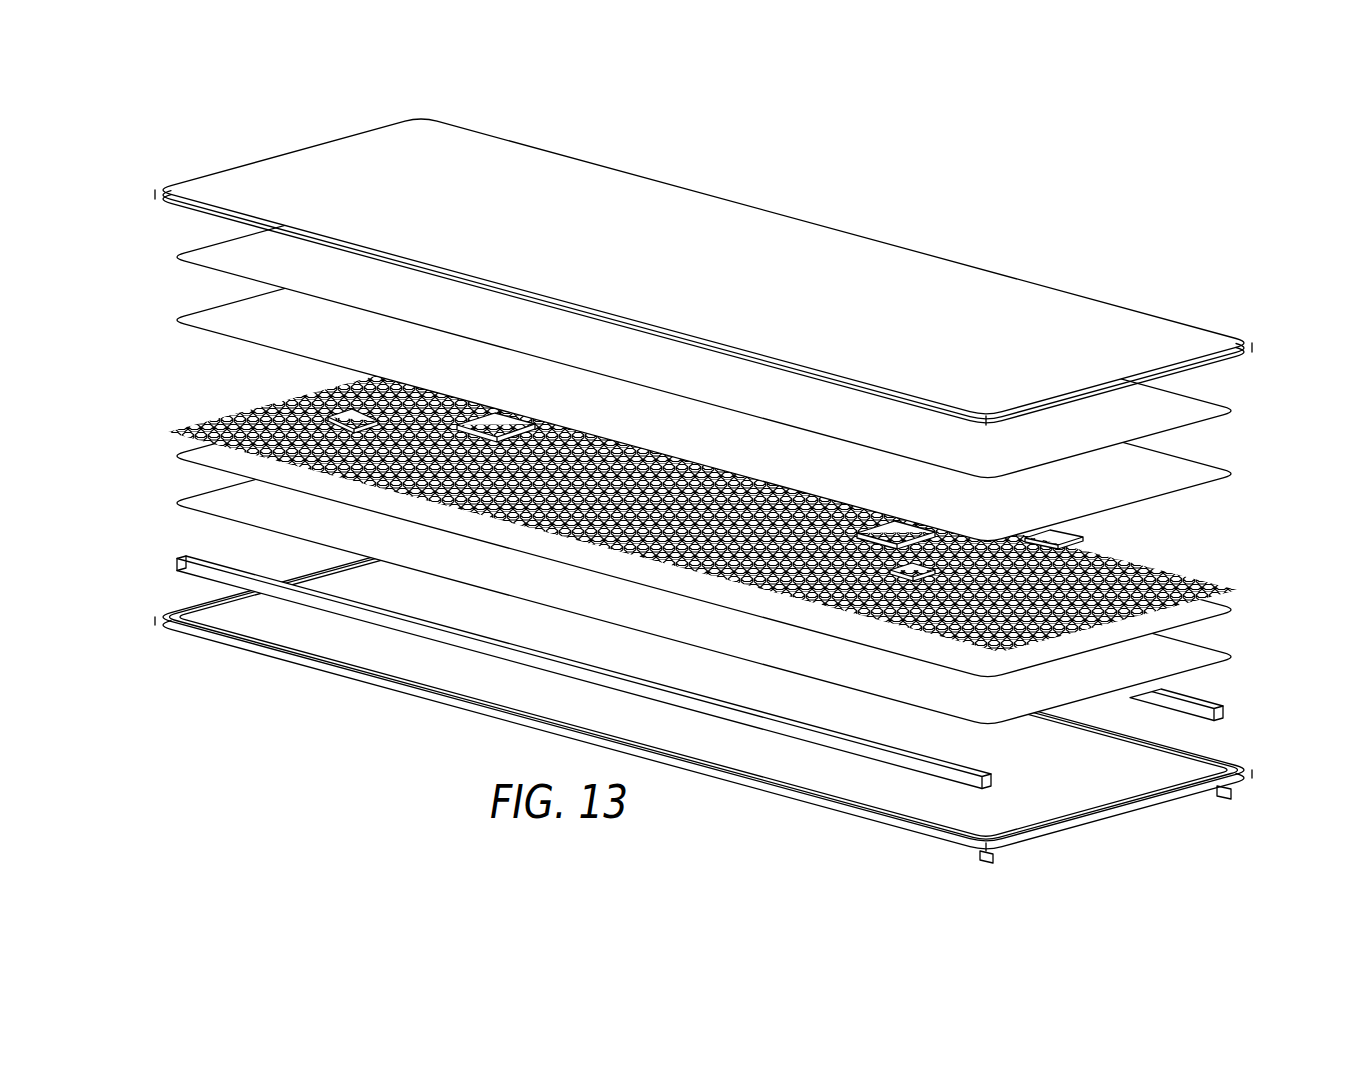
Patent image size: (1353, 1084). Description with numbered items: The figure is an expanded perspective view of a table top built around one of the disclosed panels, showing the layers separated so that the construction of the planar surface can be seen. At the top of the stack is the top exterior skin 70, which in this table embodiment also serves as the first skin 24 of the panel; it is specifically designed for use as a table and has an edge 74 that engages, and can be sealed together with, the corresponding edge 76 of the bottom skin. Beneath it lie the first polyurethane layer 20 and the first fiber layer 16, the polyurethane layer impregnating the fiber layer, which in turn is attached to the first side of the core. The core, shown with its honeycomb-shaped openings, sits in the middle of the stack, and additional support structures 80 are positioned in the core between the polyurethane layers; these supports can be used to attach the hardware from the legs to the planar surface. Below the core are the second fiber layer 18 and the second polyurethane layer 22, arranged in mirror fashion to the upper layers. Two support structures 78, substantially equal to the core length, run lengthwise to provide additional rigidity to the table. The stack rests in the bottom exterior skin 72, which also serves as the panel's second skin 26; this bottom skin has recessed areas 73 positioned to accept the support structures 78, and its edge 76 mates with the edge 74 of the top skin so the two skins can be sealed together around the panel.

The top exterior skin 70 is at (700, 519).
The edge 74 is at (705, 272).
The first skin 24 is at (1255, 342).
The first polyurethane layer 20 is at (170, 258).
The first fiber layer 16 is at (170, 321).
The second fiber layer 18 is at (170, 456).
The second polyurethane layer 22 is at (170, 503).
The additional support structures 80 is at (1085, 522).
The support structures 78 is at (993, 780).
The edge 76 is at (1252, 773).
The recessed areas 73 is at (996, 862).
The bottom exterior skin 72 is at (720, 732).
The second skin 26 is at (720, 732).